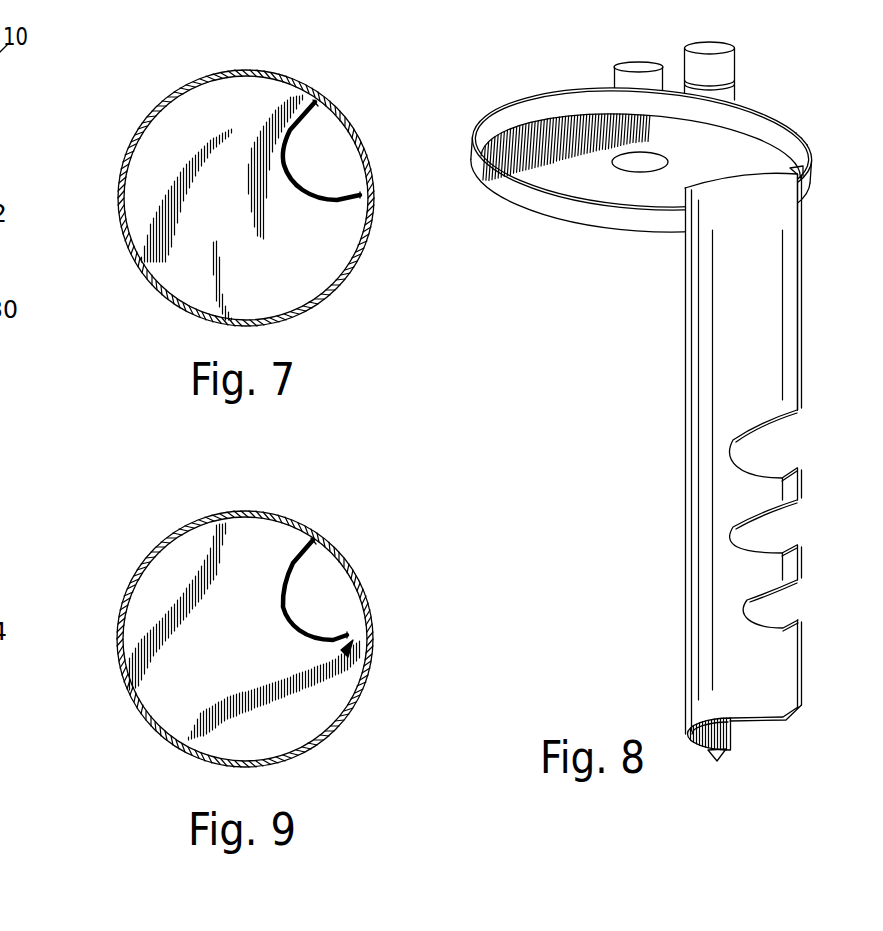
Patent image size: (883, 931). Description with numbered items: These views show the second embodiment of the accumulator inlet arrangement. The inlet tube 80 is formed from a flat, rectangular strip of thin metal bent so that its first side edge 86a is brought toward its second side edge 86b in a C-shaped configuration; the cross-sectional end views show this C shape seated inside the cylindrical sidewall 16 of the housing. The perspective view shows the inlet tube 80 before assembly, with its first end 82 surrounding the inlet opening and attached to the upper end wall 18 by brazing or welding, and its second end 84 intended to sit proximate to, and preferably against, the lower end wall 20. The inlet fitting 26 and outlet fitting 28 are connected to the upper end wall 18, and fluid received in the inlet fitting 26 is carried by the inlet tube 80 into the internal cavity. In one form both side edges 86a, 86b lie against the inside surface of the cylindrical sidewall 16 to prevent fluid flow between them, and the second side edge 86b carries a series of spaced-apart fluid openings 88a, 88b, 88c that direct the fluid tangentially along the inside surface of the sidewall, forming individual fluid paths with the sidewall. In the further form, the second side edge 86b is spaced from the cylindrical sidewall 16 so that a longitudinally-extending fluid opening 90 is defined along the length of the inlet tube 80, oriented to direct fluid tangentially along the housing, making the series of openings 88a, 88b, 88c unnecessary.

In FIG. 7, the cylindrical sidewall 16 is at (119, 238).
In FIG. 9, the cylindrical sidewall 16 is at (137, 712).
In FIG. 8, the upper end wall 18 is at (510, 108).
In FIG. 7, the lower end wall 20 is at (296, 285).
In FIG. 9, the lower end wall 20 is at (300, 720).
In FIG. 8, the inlet fitting 26 is at (708, 57).
In FIG. 8, the outlet fitting 28 is at (635, 80).
In FIG. 7, the inlet tube 80 is at (360, 222).
In FIG. 9, the inlet tube 80 is at (296, 560).
In FIG. 8, the inlet tube 80 is at (801, 257).
In FIG. 8, the first end 82 is at (758, 186).
In FIG. 8, the second end 84 is at (750, 718).
In FIG. 7, the first side edge 86a is at (298, 98).
In FIG. 9, the first side edge 86a is at (312, 542).
In FIG. 8, the first side edge 86a is at (722, 757).
In FIG. 7, the second side edge 86b is at (362, 200).
In FIG. 9, the second side edge 86b is at (350, 634).
In FIG. 8, the second side edge 86b is at (787, 328).
In FIG. 8, the fluid opening 88a is at (745, 602).
In FIG. 8, the fluid opening 88b is at (736, 540).
In FIG. 8, the fluid opening 88c is at (733, 448).
In FIG. 9, the longitudinally-extending fluid opening 90 is at (350, 643).